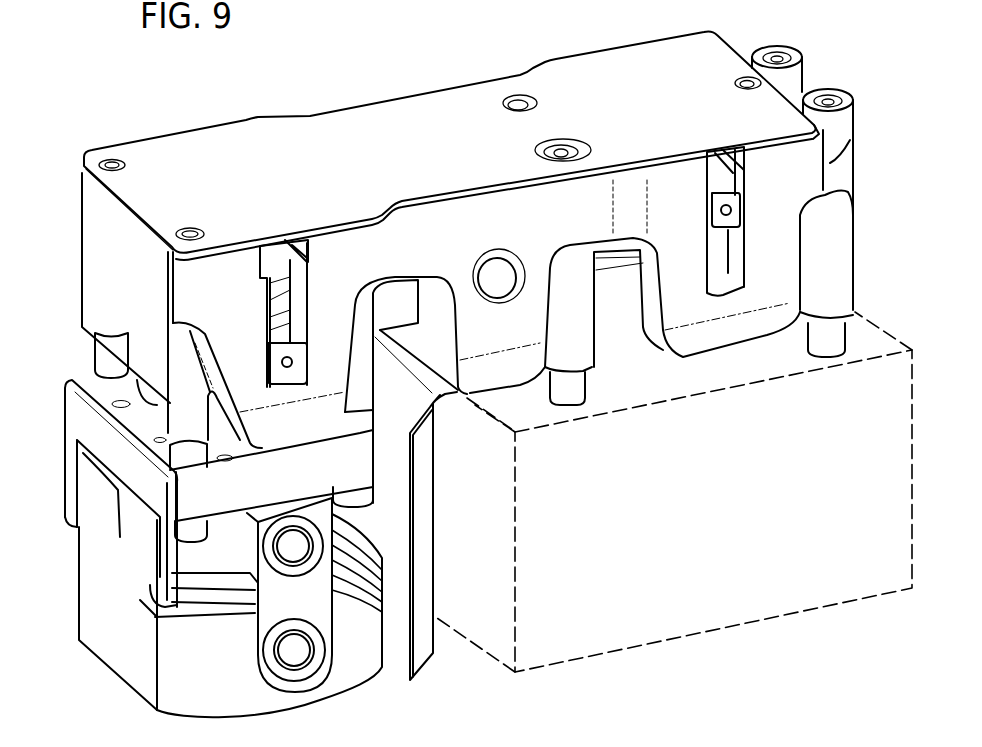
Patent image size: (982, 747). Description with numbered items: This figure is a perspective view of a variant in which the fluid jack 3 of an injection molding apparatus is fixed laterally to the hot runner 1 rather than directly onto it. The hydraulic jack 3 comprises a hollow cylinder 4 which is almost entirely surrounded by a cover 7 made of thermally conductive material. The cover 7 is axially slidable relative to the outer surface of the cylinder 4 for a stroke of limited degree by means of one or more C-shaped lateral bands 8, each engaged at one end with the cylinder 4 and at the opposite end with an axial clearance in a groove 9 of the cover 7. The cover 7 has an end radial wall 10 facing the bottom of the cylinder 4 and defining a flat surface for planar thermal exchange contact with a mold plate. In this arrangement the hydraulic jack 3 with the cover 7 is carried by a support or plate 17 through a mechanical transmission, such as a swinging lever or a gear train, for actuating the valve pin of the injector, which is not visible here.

The hot runner 1 is at (810, 592).
The fluid jack 3 is at (107, 507).
The hollow cylinder 4 is at (273, 601).
The cover 7 is at (113, 645).
The C-shaped lateral band 8 is at (67, 420).
The groove 9 is at (340, 585).
The end radial wall 10 is at (233, 718).
The support or plate 17 is at (417, 122).